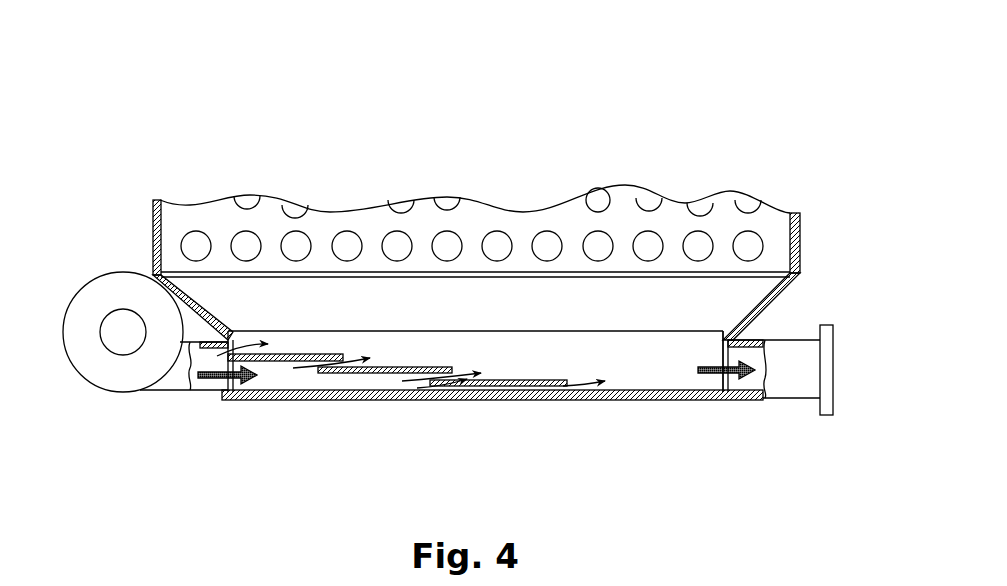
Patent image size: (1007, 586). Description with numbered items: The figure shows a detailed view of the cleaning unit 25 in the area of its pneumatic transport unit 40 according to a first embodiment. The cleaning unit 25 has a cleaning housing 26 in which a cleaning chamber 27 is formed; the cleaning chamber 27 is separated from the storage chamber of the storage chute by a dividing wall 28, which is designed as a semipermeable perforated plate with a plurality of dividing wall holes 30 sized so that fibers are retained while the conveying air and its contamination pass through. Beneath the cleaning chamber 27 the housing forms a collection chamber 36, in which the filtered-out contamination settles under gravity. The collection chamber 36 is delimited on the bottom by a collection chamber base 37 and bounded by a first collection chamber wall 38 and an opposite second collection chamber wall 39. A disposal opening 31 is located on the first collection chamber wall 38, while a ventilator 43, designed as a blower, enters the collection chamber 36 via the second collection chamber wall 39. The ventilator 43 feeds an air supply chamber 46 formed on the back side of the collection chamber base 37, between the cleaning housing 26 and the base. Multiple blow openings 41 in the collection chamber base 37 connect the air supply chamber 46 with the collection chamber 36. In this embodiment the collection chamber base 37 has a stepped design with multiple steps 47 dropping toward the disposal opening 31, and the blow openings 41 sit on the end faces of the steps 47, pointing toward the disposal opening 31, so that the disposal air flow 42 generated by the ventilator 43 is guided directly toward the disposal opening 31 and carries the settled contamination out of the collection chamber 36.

The cleaning unit 25 is at (197, 80).
The cleaning housing 26 is at (153, 220).
The cleaning chamber 27 is at (773, 228).
The dividing wall 28 is at (727, 213).
The dividing wall holes 30 is at (649, 246).
The disposal opening 31 is at (733, 383).
The collection chamber 36 is at (533, 325).
The collection chamber base 37 is at (513, 387).
The first collection chamber wall 38 is at (728, 338).
The second collection chamber wall 39 is at (157, 279).
The transport unit 40 is at (273, 415).
The blow openings 41 is at (225, 355).
The disposal air flow 42 is at (720, 395).
The ventilator 43 is at (110, 355).
The air supply chamber 46 is at (368, 380).
The steps 47 is at (225, 355).